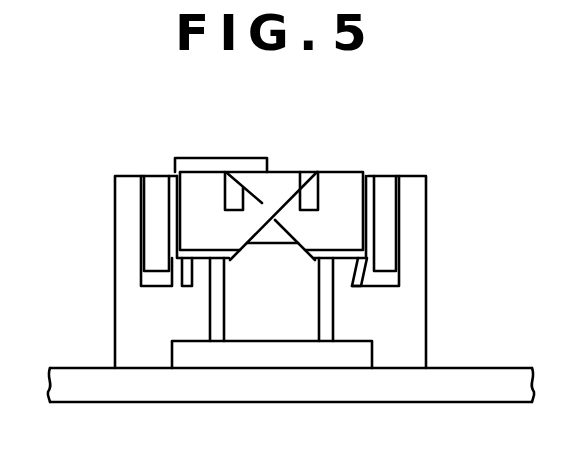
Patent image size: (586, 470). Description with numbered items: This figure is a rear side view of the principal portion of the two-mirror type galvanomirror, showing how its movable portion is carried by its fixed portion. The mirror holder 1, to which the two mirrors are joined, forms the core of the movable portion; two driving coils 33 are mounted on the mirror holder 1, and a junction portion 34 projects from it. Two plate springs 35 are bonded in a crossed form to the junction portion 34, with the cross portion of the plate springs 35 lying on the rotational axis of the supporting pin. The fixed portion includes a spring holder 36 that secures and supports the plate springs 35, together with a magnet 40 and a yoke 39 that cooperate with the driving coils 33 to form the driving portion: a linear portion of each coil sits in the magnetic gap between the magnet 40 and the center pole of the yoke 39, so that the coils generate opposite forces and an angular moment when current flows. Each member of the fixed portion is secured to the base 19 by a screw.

The mirror holder 1 is at (197, 185).
The base 19 is at (445, 395).
The driving coils 33 is at (180, 266).
The junction portion 34 is at (318, 193).
The plate springs 35 is at (288, 195).
The spring holder 36 is at (280, 342).
The yoke 39 is at (120, 305).
The magnet 40 is at (156, 186).